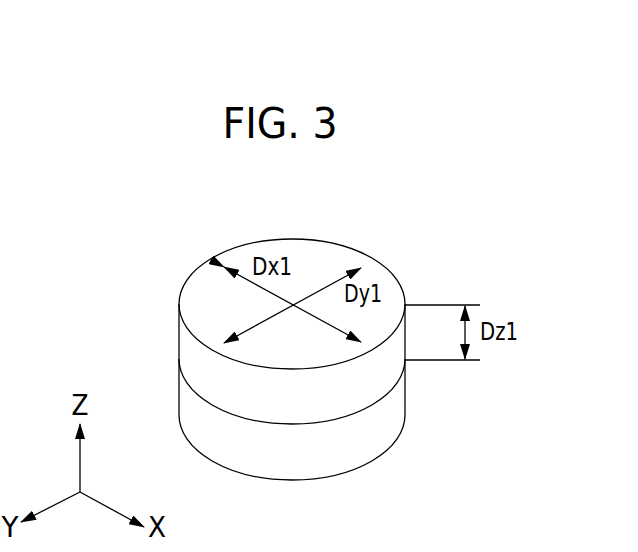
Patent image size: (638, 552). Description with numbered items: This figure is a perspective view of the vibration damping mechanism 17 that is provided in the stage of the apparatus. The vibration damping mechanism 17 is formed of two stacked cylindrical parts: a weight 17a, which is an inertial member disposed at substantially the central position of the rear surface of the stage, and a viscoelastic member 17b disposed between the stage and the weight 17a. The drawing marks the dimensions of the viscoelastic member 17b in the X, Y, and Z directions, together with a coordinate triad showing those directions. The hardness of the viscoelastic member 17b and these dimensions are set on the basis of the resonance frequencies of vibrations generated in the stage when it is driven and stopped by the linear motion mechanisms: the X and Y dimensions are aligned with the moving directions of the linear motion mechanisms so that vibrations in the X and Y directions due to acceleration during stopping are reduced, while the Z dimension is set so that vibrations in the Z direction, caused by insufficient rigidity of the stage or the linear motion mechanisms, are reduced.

The vibration damping mechanism 17 is at (394, 226).
The weight 17a is at (400, 411).
The viscoelastic member 17b is at (192, 348).